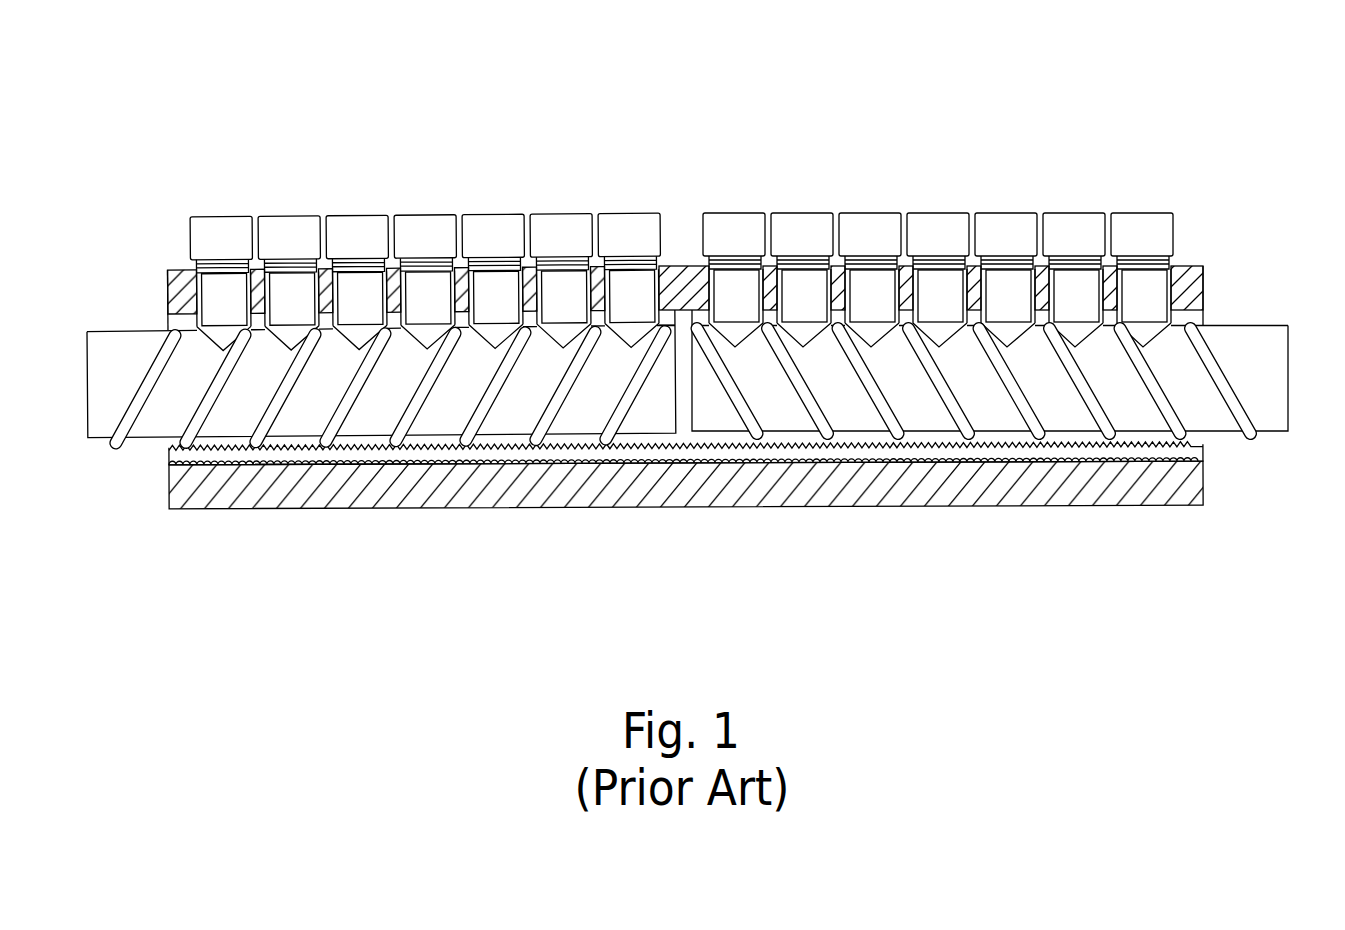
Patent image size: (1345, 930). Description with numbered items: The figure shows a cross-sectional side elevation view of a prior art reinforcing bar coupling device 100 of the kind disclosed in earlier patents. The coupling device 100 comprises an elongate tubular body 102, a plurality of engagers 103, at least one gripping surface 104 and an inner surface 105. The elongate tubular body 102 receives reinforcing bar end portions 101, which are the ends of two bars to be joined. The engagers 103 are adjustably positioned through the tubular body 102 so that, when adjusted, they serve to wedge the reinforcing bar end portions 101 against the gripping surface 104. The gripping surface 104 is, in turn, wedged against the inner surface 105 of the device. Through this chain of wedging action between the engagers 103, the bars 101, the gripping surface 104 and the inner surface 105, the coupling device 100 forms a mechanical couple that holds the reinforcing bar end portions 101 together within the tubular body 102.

The coupling device 100 is at (683, 100).
The reinforcing bar end portions 101 is at (93, 380).
The elongate tubular body 102 is at (1193, 272).
The engagers 103 is at (230, 223).
The gripping surface 104 is at (1200, 452).
The inner surface 105 is at (177, 445).